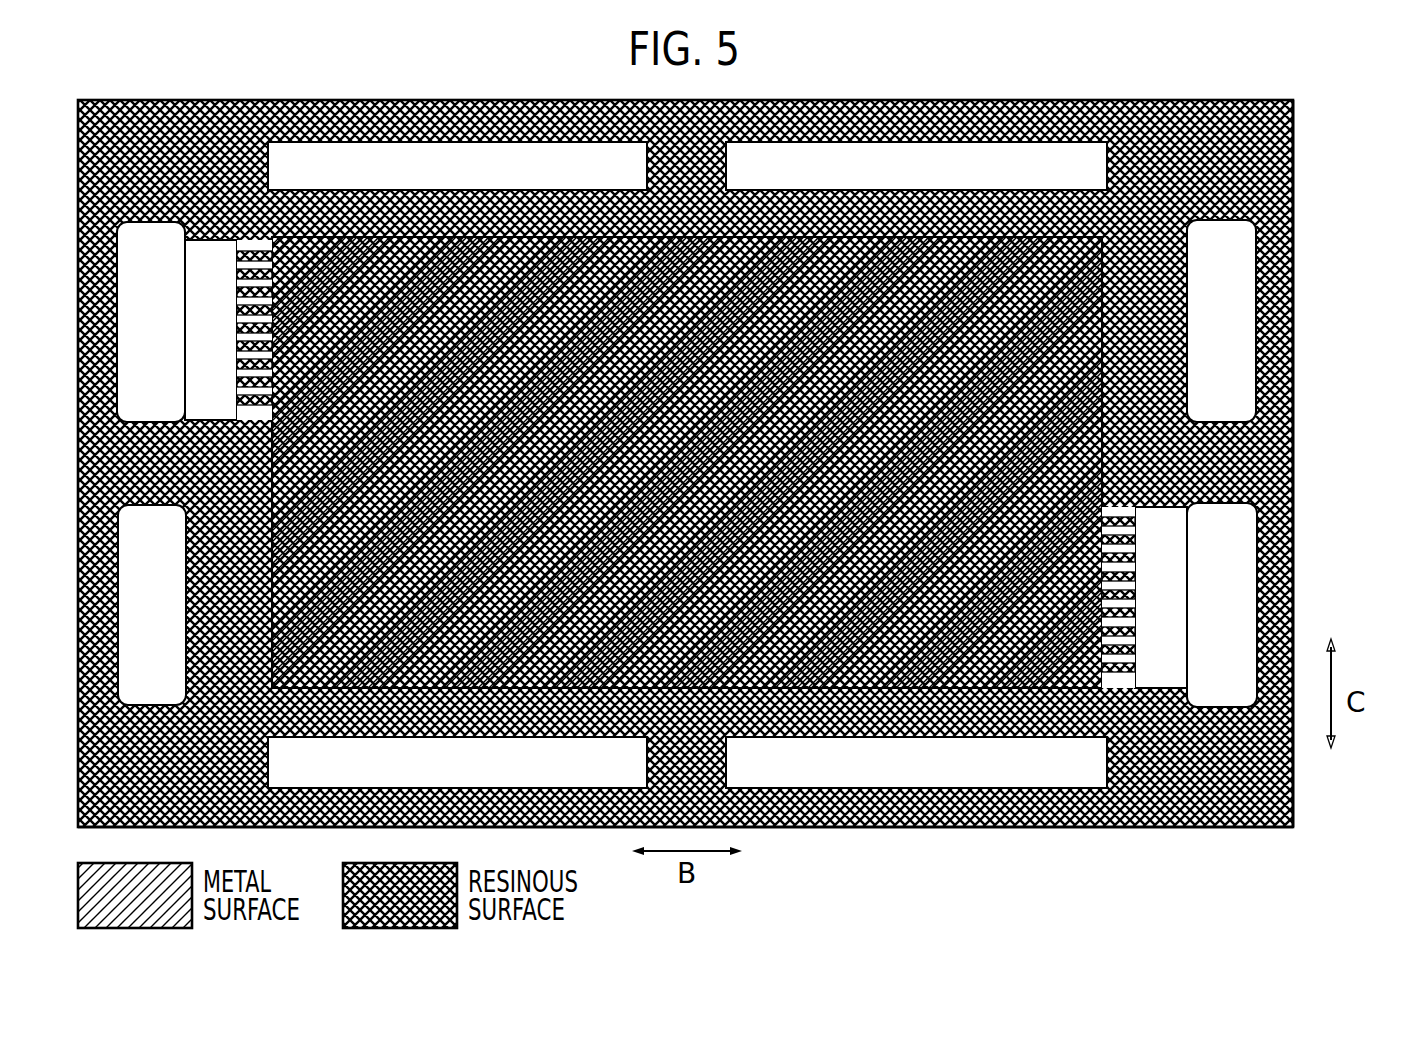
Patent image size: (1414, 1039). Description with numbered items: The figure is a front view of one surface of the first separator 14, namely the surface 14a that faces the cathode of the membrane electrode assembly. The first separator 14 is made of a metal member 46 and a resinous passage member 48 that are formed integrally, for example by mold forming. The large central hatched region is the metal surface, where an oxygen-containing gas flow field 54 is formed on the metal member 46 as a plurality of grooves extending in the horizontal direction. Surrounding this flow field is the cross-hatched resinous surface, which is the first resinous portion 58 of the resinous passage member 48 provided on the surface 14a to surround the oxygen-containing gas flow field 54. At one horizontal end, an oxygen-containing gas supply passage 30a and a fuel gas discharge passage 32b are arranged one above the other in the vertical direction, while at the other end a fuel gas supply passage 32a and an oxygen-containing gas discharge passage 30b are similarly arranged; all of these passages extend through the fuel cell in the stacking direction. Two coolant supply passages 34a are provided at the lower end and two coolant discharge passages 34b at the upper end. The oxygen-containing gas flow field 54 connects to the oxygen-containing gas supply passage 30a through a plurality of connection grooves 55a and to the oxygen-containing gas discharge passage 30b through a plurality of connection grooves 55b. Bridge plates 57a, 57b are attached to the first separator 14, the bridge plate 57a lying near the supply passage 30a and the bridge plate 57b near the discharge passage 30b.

The first separator 14 is at (1059, 81).
The surface of the first separator 14a is at (1165, 828).
The oxygen-containing gas supply passage 30a is at (151, 322).
The oxygen-containing gas discharge passage 30b is at (1222, 605).
The fuel gas supply passage 32a is at (1221, 321).
The fuel gas discharge passage 32b is at (152, 605).
The coolant supply passages 34a is at (687, 762).
The coolant discharge passages 34b is at (687, 166).
The metal member 46 is at (397, 267).
The resinous passage member 48 is at (1300, 525).
The oxygen-containing gas flow field 54 is at (320, 660).
The connection grooves 55a is at (245, 252).
The connection grooves 55b is at (1128, 622).
The bridge plate 57a is at (208, 378).
The bridge plate 57b is at (1163, 550).
The first resinous portion 58 is at (1264, 464).